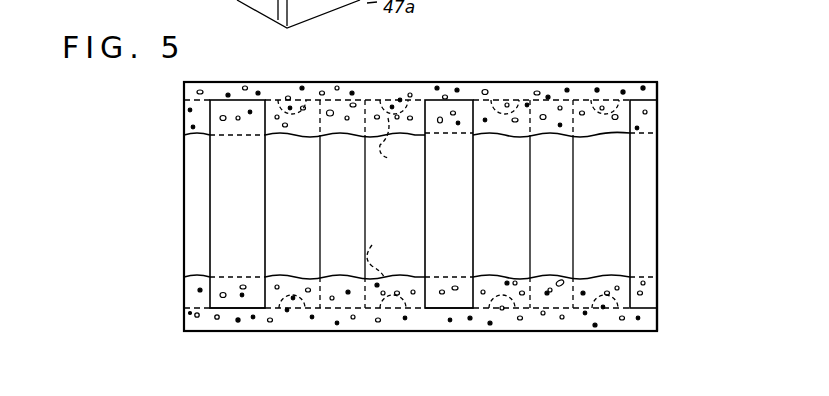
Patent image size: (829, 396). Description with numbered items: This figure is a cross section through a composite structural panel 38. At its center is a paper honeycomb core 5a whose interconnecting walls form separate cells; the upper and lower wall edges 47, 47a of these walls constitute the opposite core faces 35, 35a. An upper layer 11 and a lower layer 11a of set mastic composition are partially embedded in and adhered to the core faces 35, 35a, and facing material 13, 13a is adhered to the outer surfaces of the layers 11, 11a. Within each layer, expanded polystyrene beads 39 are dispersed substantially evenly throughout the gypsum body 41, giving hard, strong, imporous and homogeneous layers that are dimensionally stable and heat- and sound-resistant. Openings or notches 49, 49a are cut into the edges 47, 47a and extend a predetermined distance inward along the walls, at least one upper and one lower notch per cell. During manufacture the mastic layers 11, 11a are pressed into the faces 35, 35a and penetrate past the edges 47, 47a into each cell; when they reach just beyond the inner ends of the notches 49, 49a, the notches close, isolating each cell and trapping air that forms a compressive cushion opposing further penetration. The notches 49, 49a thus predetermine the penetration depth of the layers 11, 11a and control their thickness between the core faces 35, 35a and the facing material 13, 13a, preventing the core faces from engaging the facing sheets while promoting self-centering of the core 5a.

The honeycomb core 5a is at (645, 203).
The upper layer 11 is at (275, 62).
The lower layer 11a is at (285, 320).
The facing material 13 is at (357, 60).
The facing material 13a is at (538, 335).
The upper face 35 is at (460, 100).
The lower face 35a is at (432, 310).
The composite structural panel 38 is at (576, 58).
The expanded polystyrene beads 39 is at (643, 88).
The gypsum body 41 is at (650, 93).
The upper wall edges 47 is at (378, 100).
The lower wall edges 47a is at (365, 308).
The upper notch 49 is at (394, 146).
The lower notch 49a is at (388, 258).